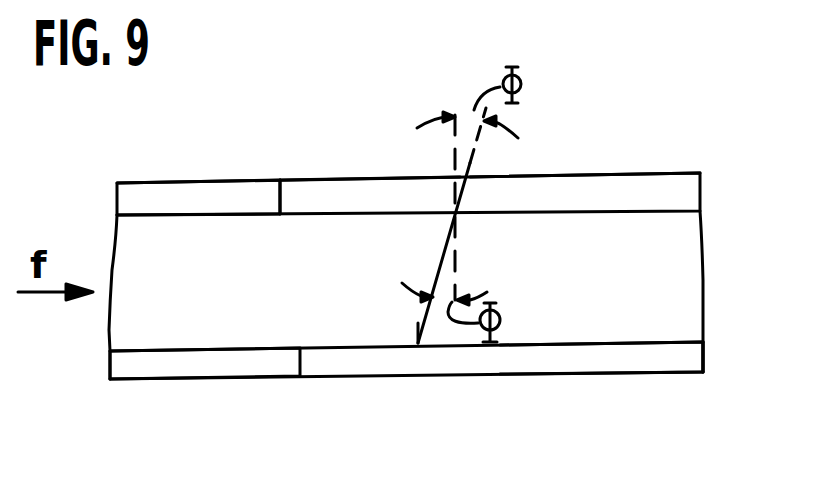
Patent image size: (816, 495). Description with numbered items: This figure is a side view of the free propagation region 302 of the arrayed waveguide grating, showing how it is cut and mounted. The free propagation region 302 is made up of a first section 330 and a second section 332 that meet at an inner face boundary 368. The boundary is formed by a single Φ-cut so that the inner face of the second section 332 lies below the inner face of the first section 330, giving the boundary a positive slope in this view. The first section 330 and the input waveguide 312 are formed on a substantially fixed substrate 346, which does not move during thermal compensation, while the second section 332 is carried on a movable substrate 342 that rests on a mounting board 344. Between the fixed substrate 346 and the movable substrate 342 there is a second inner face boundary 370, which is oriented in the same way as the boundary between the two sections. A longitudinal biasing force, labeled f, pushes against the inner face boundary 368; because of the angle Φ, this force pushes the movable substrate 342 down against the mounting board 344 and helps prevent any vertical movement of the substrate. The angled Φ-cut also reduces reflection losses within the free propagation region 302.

The free propagation region 302 is at (418, 80).
The input waveguide 312 is at (140, 183).
The first section 330 is at (330, 180).
The second section 332 is at (593, 185).
The inner face boundary 368 is at (462, 187).
The inner face boundary 370 is at (418, 323).
The fixed substrate 346 is at (170, 333).
The mounting board 344 is at (596, 362).
The movable substrate 342 is at (678, 327).